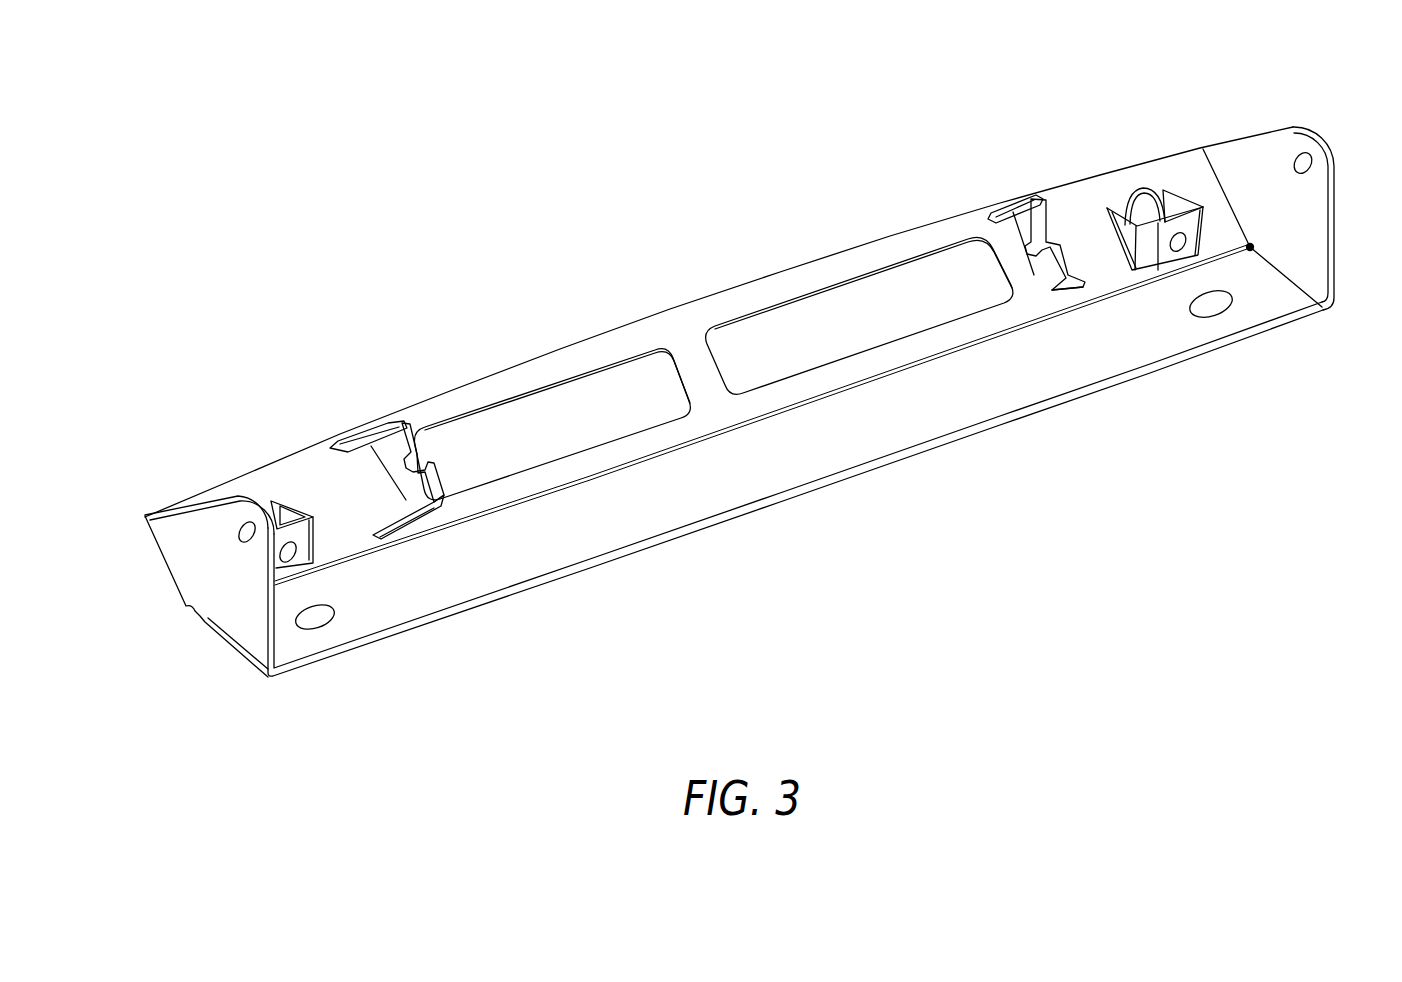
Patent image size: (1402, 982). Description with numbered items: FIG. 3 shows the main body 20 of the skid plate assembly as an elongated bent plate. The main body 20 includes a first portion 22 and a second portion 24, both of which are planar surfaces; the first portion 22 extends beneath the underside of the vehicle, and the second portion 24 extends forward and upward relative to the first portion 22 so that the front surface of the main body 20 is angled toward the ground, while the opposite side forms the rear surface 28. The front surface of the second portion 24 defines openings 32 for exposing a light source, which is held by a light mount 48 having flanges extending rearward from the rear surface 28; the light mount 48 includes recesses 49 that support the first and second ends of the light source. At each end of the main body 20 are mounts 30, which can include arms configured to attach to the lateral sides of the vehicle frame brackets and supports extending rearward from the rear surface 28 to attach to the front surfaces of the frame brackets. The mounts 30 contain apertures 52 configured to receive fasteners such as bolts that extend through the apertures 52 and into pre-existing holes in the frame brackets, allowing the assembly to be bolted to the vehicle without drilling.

The main body 20 is at (147, 131).
The first portion 22 is at (552, 557).
The second portion 24 is at (538, 372).
The rear surface 28 is at (682, 322).
The mounts 30 is at (200, 543).
The opening 32 is at (653, 395).
The light mount 48 is at (406, 500).
The recesses 49 is at (417, 463).
The apertures 52 is at (310, 512).